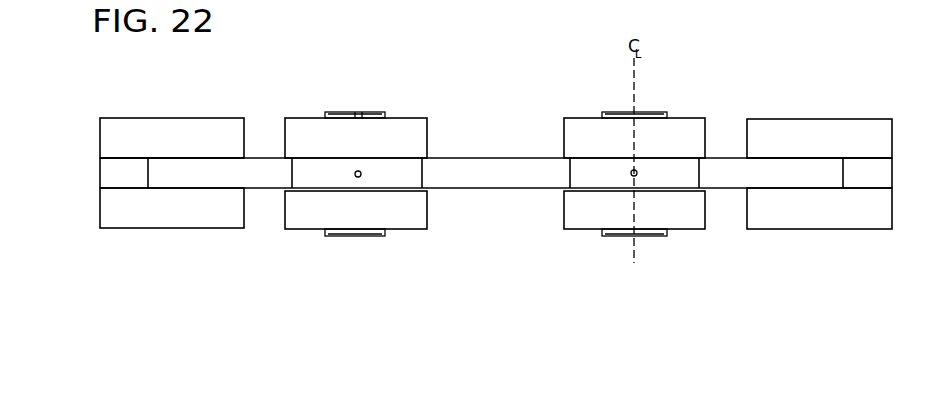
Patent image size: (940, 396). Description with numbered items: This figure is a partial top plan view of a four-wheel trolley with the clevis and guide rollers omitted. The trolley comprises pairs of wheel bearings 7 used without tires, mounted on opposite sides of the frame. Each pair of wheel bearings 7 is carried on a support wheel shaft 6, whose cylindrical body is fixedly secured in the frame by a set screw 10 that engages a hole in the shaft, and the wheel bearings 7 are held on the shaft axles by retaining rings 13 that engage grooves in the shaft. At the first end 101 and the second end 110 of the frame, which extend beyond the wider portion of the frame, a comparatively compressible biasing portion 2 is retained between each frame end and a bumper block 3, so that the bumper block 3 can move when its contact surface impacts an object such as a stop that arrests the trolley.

The biasing portion 2 is at (121, 172).
The bumper block 3 is at (173, 135).
The support wheel shaft 6 is at (366, 112).
The wheel bearing 7 is at (385, 140).
The set screw 10 is at (361, 172).
The retaining ring 13 is at (355, 113).
The second end 110 is at (155, 172).
The first end 101 is at (839, 174).